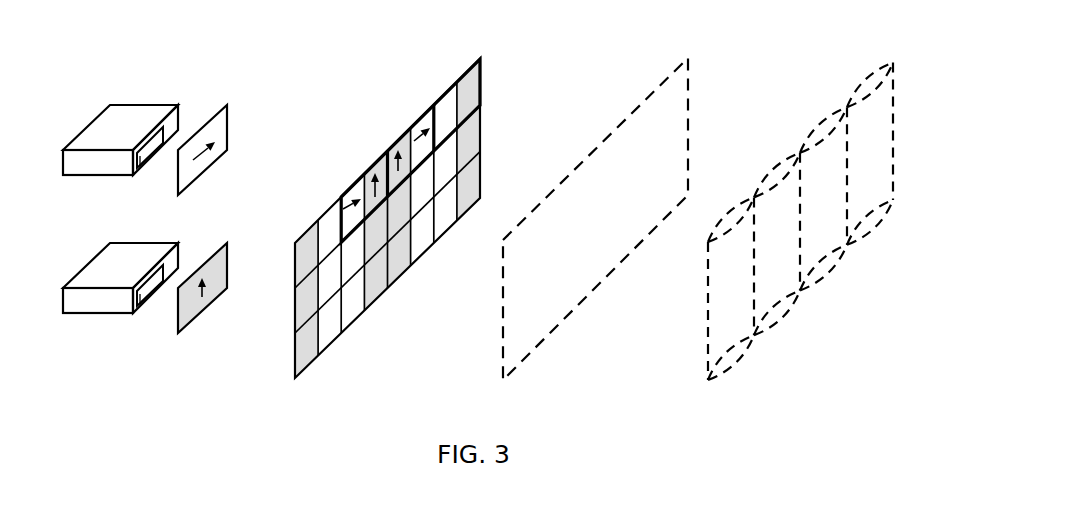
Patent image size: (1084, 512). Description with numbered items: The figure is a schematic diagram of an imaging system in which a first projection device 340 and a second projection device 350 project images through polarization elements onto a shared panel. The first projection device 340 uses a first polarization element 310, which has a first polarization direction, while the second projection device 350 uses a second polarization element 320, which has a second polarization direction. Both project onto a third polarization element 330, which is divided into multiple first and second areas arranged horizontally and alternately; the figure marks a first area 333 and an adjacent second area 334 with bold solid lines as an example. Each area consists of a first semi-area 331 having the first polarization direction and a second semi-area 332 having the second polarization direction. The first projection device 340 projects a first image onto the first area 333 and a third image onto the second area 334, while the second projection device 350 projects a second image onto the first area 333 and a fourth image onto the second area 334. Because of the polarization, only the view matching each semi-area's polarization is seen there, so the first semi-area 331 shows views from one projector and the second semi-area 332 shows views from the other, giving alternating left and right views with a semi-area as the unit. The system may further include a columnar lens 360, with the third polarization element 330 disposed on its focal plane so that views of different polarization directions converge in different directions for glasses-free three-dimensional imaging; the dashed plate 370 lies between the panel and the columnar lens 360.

The first polarization element 310 is at (228, 113).
The second polarization element 320 is at (226, 253).
The third polarization element 330 is at (482, 75).
The first semi-area 331 is at (348, 199).
The second semi-area 332 is at (390, 151).
The first area 333 is at (368, 169).
The second area 334 is at (417, 134).
The first projection device 340 is at (160, 106).
The second projection device 350 is at (105, 313).
The columnar lens 360 is at (897, 80).
The phase retardation plate 370 is at (690, 77).